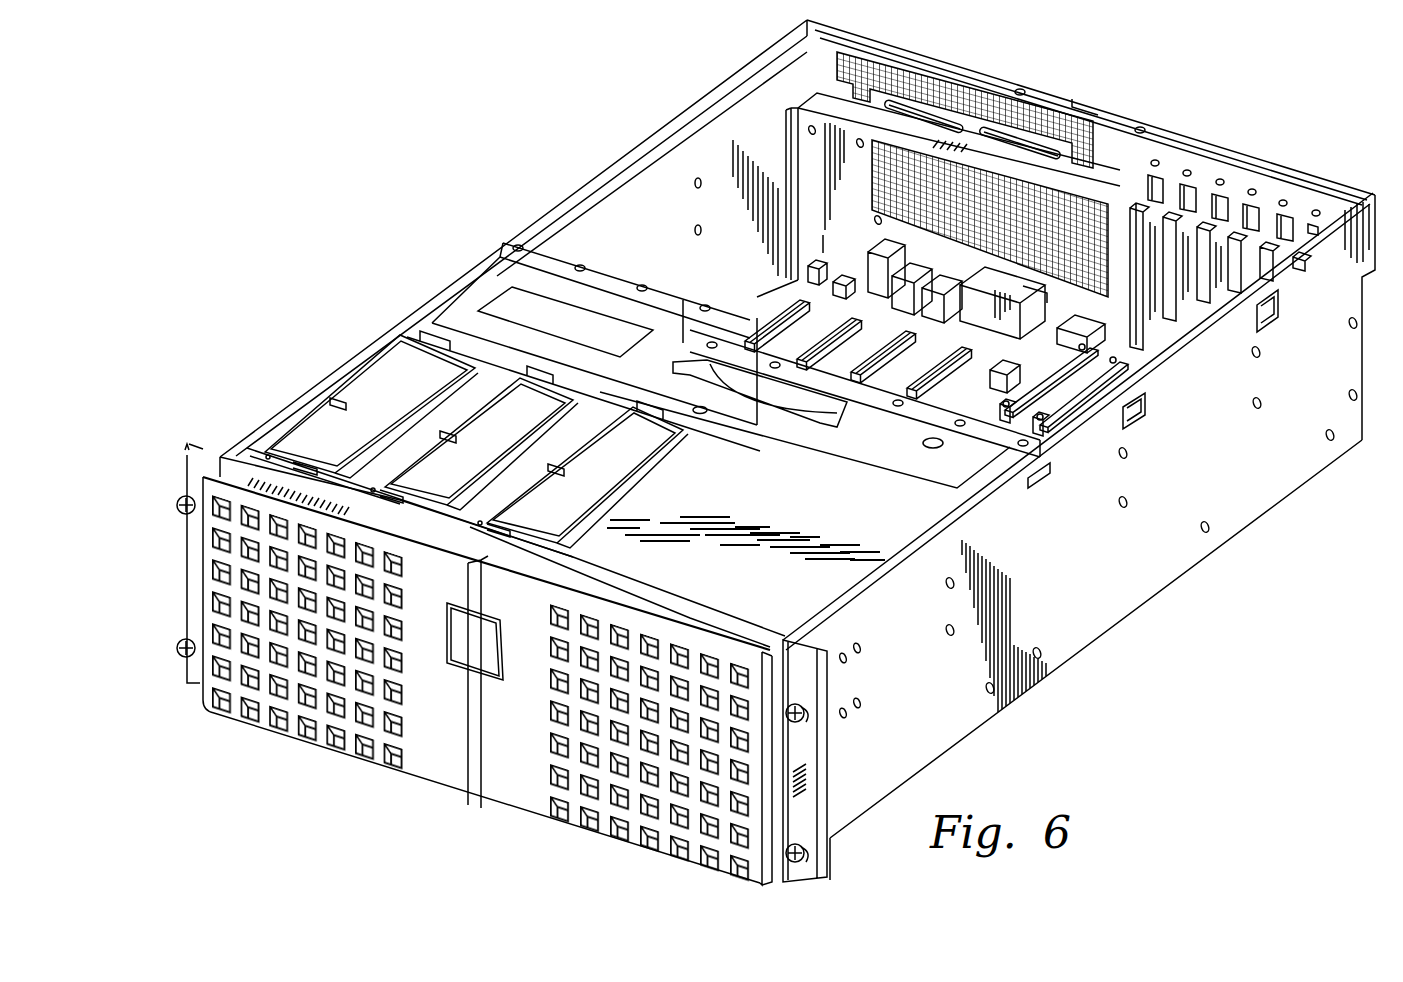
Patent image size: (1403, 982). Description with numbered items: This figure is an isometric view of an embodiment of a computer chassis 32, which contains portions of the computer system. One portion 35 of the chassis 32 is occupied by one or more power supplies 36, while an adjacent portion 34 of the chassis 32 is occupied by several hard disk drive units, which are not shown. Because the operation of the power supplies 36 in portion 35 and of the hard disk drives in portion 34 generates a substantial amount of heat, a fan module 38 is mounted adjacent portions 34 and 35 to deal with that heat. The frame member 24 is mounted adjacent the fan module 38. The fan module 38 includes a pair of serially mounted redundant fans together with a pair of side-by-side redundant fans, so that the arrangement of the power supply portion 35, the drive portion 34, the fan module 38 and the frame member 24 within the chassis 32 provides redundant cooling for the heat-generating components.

The frame member 24 is at (722, 309).
The chassis 32 is at (1057, 90).
The portion of chassis 34 is at (835, 575).
The portion of chassis 35 is at (696, 607).
The power supplies 36 is at (321, 431).
The fan module 38 is at (606, 297).